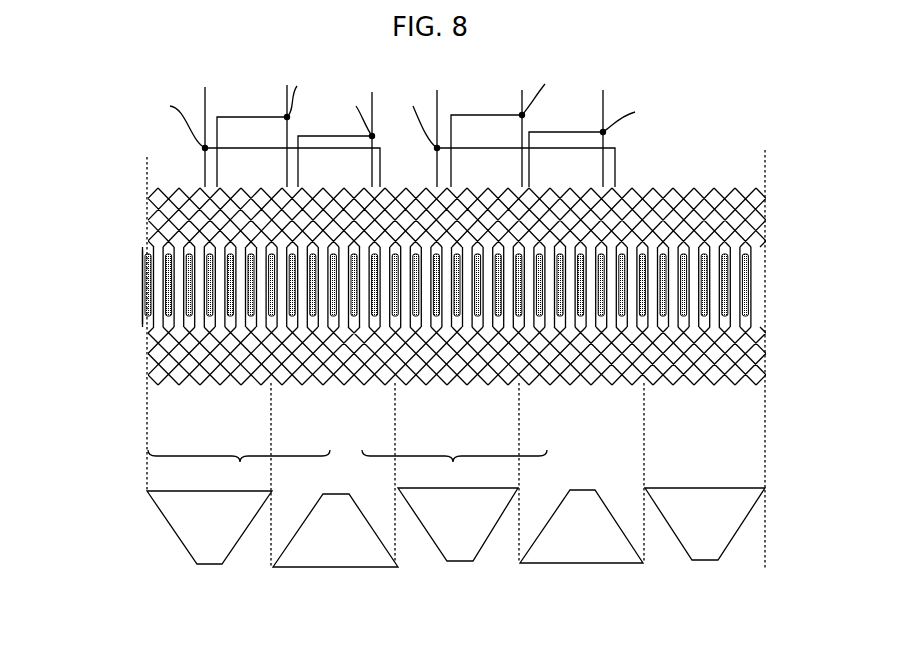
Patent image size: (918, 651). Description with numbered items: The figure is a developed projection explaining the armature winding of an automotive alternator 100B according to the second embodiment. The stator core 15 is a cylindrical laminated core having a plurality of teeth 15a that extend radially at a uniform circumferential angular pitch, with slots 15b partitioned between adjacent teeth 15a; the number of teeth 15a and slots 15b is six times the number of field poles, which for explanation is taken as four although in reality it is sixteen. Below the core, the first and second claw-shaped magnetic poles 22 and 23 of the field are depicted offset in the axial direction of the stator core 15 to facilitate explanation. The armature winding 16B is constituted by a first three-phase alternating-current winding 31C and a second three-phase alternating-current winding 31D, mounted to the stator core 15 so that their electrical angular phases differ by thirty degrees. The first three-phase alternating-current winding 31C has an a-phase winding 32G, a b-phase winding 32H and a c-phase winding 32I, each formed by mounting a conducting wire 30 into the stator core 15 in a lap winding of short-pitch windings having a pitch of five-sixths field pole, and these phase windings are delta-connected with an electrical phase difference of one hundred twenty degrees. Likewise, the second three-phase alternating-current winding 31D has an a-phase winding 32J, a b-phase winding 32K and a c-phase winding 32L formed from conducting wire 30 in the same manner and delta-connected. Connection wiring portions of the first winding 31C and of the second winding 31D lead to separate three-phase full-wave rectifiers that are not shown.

The automotive alternator 100B is at (90, 82).
The stator core 15 is at (139, 305).
The teeth 15a is at (147, 290).
The slots 15b is at (157, 273).
The conducting wire 30 is at (410, 187).
The armature winding 16B is at (582, 384).
The a-phase winding 32G is at (208, 386).
The b-phase winding 32H is at (250, 386).
The c-phase winding 32I is at (292, 386).
The a-phase winding 32J is at (433, 382).
The b-phase winding 32K is at (472, 382).
The c-phase winding 32L is at (513, 382).
The first three-phase alternating-current winding 31C is at (239, 469).
The second three-phase alternating-current winding 31D is at (454, 468).
The first claw-shaped magnetic poles 22 is at (197, 548).
The second claw-shaped magnetic poles 23 is at (300, 557).